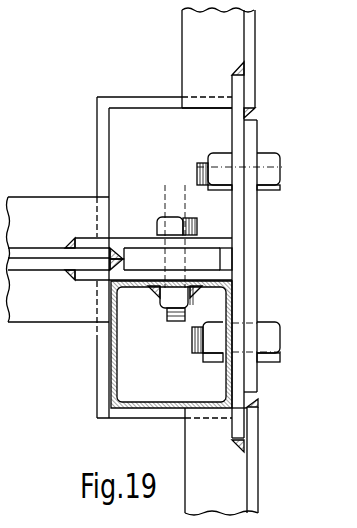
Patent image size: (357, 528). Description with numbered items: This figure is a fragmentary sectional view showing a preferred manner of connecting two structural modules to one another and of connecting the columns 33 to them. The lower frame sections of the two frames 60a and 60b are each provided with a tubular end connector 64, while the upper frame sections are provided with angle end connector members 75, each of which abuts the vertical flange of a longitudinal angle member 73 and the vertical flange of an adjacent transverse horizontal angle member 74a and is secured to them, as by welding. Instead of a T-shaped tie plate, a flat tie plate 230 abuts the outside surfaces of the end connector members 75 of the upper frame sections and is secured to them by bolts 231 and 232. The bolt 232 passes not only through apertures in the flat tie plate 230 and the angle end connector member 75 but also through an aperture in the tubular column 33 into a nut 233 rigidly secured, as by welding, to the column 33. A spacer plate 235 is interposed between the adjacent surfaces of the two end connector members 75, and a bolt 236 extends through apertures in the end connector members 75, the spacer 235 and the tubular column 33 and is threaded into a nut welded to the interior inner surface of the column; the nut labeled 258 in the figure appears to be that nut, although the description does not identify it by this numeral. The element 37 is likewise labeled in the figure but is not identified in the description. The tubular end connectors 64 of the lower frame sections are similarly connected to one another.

The longitudinal angle member 73 is at (249, 31).
The flat tie plate 230 is at (247, 220).
The bolt 231 is at (267, 152).
The bolt 232 is at (265, 360).
The nut 233 is at (205, 352).
The spacer plate 235 is at (148, 217).
The bolt 236 is at (176, 215).
The nut 258 is at (160, 300).
The end connector member 75 is at (88, 237).
The transverse angle member 74a is at (35, 343).
The frame 60a is at (148, 77).
The frame 60b is at (107, 425).
The tubular end connector 64 is at (100, 418).
The column 33 is at (110, 355).
The lower post 37 is at (255, 473).